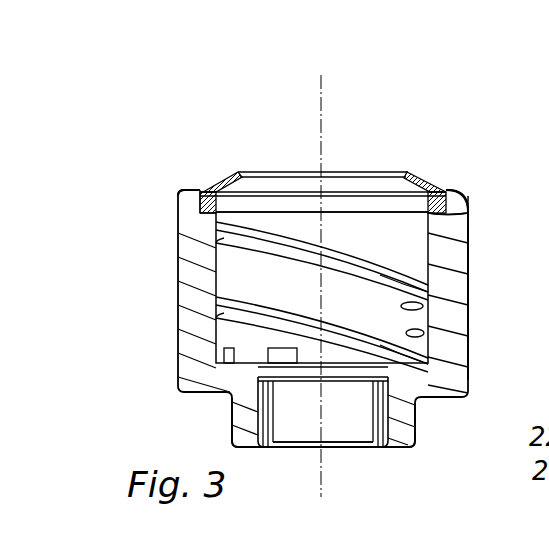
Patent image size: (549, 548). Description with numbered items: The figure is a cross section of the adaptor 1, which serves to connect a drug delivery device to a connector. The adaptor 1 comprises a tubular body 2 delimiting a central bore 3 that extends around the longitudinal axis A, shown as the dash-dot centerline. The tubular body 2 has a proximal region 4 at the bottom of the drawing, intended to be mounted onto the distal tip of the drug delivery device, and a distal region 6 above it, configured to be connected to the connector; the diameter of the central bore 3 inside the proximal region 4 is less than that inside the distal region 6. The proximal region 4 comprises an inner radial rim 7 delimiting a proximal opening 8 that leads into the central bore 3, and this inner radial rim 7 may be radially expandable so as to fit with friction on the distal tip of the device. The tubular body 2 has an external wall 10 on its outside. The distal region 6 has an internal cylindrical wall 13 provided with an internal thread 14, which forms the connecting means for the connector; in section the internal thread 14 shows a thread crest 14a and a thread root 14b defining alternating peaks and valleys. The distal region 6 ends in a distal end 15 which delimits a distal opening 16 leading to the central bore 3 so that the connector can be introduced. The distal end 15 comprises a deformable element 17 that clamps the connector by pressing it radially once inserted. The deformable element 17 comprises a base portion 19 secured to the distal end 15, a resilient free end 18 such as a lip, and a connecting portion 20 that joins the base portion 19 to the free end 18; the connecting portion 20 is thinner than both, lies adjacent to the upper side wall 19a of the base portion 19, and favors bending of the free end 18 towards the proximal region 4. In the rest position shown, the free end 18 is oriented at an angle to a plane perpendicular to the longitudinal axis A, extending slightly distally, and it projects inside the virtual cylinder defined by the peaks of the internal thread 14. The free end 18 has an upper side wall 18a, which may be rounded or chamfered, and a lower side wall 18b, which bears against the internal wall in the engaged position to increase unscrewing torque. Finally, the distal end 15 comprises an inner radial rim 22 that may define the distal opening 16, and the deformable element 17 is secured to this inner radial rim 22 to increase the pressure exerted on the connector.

The adaptor 1 is at (168, 96).
The tubular body 2 is at (446, 253).
The central bore 3 is at (385, 225).
The proximal region 4 is at (230, 412).
The distal region 6 is at (178, 273).
The inner radial rim 7 is at (358, 378).
The proximal opening 8 is at (292, 447).
The external wall 10 is at (480, 294).
The internal cylindrical wall 13 is at (303, 232).
The internal thread 14 is at (292, 226).
The thread crest 14a is at (416, 308).
The thread root 14b is at (418, 337).
The distal end 15 is at (463, 189).
The distal opening 16 is at (358, 204).
The deformable element 17 is at (470, 212).
The resilient free end 18 is at (408, 174).
The upper side wall 18a is at (214, 192).
The lower side wall 18b is at (252, 178).
The base portion 19 is at (197, 185).
The upper side wall 19a is at (189, 193).
The connecting portion 20 is at (208, 185).
The inner radial rim 22 is at (436, 193).
The longitudinal axis A is at (331, 285).